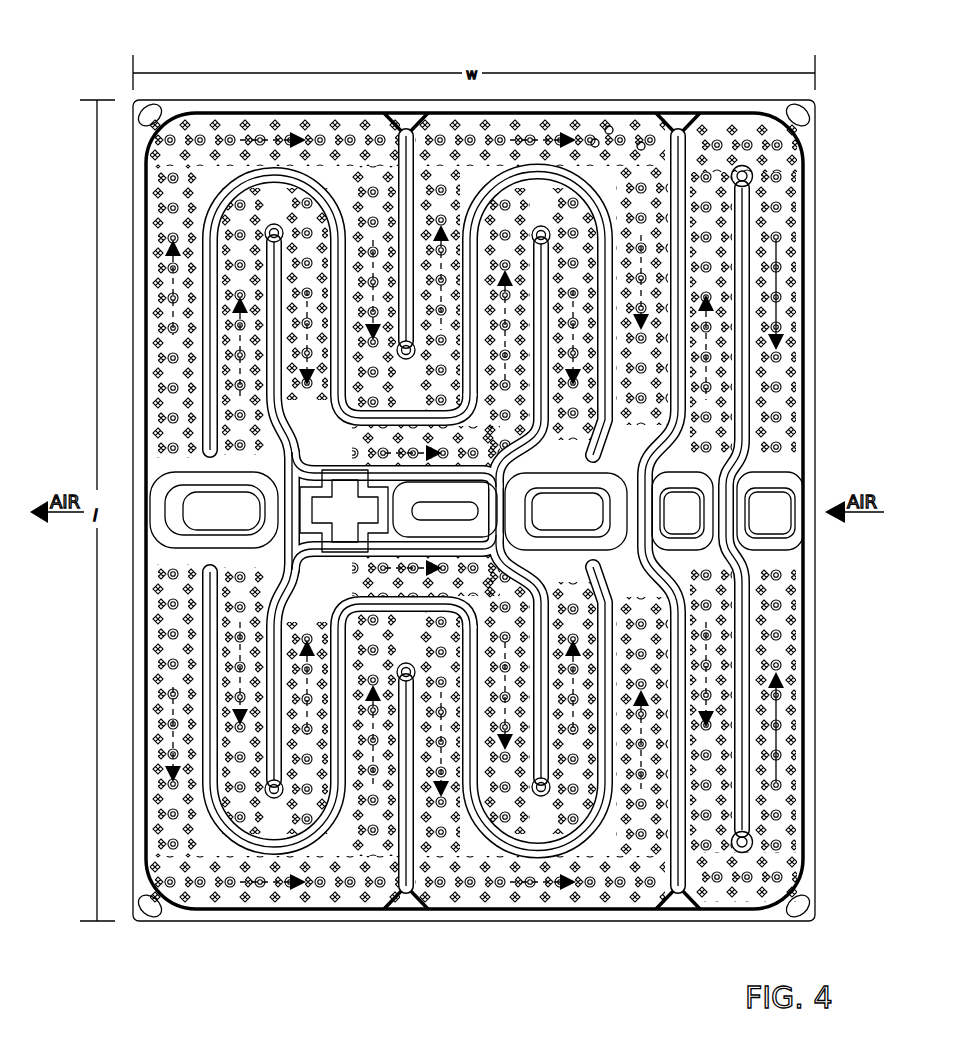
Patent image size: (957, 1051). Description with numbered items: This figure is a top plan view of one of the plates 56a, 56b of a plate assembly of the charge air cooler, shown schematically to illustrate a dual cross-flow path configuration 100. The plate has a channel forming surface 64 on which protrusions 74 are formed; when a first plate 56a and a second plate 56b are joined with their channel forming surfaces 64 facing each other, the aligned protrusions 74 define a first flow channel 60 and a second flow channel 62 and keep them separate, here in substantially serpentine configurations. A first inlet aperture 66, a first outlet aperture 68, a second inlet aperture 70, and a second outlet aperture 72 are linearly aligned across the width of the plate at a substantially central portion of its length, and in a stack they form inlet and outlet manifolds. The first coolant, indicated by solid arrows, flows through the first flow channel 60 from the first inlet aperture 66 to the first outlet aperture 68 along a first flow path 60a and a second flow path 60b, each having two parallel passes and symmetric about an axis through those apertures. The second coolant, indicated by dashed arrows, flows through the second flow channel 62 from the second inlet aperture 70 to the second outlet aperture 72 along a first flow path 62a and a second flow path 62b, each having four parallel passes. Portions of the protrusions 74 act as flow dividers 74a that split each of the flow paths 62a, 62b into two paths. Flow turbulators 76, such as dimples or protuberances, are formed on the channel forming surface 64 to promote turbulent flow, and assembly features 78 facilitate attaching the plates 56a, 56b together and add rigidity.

The first plate 56a is at (168, 32).
The second plate 56b is at (461, 462).
The dual cross-flow path configuration 100 is at (258, 32).
The flow turbulators 76 is at (641, 145).
The first flow path 62a is at (158, 205).
The second flow path 62b is at (158, 835).
The second flow channel 62 is at (596, 898).
The first flow path 60a is at (783, 312).
The second flow path 60b is at (788, 732).
The first flow channel 60 is at (795, 860).
The channel forming surface 64 is at (220, 900).
The first inlet aperture 66 is at (678, 520).
The first outlet aperture 68 is at (765, 503).
The second inlet aperture 70 is at (225, 500).
The second outlet aperture 72 is at (583, 527).
The protrusions 74 is at (742, 833).
The flow dividers 74a is at (318, 838).
The assembly features 78 is at (350, 510).